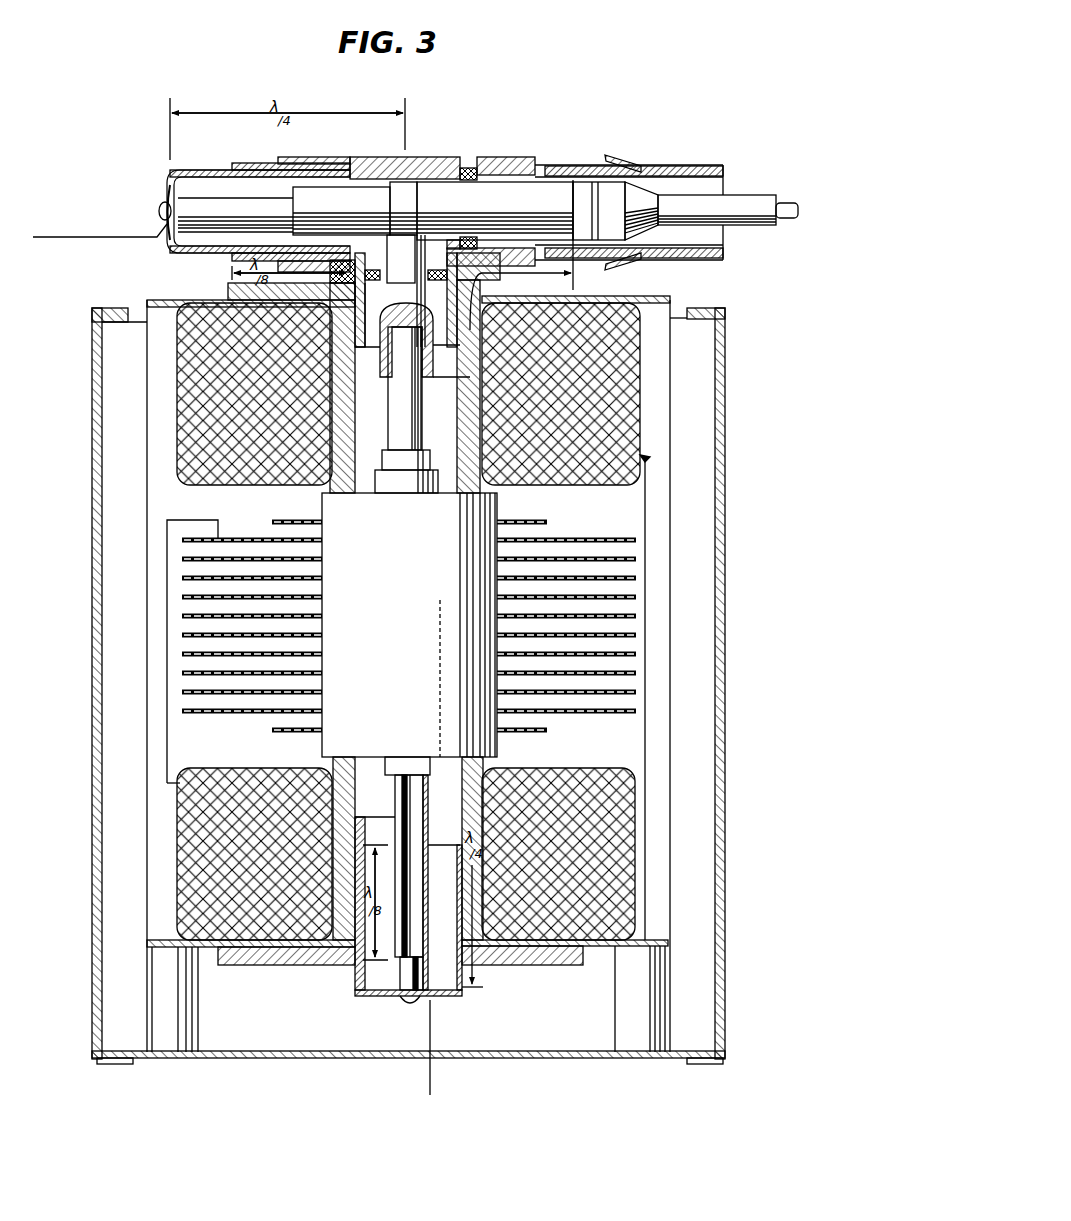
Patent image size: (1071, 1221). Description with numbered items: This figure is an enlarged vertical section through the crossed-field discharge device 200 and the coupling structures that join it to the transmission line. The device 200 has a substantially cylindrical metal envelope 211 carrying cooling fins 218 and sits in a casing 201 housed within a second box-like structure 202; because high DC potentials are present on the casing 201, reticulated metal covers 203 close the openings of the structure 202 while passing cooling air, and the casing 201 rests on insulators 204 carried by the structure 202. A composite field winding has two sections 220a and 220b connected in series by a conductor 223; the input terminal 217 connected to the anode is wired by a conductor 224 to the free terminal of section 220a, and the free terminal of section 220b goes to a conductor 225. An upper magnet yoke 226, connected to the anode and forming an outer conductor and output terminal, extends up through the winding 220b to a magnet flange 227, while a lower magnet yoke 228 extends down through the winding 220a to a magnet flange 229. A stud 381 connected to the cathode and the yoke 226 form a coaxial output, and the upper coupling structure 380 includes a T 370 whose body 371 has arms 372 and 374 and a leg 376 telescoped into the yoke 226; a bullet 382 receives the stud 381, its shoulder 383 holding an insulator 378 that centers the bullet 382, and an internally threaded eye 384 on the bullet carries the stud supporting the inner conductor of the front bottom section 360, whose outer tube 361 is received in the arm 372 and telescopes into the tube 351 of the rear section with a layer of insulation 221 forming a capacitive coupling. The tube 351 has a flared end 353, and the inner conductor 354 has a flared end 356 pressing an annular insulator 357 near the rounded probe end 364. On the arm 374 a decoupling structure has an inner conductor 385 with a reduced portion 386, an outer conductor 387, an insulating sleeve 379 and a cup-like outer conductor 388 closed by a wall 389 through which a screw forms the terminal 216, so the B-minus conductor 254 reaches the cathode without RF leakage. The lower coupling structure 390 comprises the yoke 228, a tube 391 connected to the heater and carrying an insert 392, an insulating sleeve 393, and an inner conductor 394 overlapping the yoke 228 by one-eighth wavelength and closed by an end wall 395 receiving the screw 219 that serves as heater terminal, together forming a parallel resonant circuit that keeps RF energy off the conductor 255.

The crossed-field discharge device 200 is at (499, 505).
The casing 201 is at (158, 300).
The second box-like structure 202 is at (338, 1059).
The reticulated metal covers 203 is at (96, 982).
The insulators 204 is at (197, 1012).
The metal envelope 211 is at (416, 609).
The cathode terminal 216 is at (160, 210).
The anode input terminal 217 is at (220, 537).
The cooling fins 218 is at (182, 579).
The heater terminal screw 219 is at (407, 1003).
The field winding section 220a is at (180, 856).
The field winding section 220b is at (622, 397).
The layer of insulation 221 is at (574, 173).
The conductor 223 is at (647, 648).
The conductor 224 is at (167, 677).
The conductor 225 is at (178, 336).
The magnet yoke 226 is at (337, 407).
The magnet flange 227 is at (232, 291).
The magnet yoke 228 is at (343, 837).
The magnet flange 229 is at (280, 962).
The B-minus conductor 254 is at (98, 242).
The conductor 255 is at (436, 1069).
The outer conductor tube 351 is at (694, 165).
The flared end 353 is at (641, 160).
The inner conductor tube 354 is at (750, 199).
The flared end 356 is at (647, 231).
The annular insulator 357 is at (594, 238).
The front bottom transmission line section 360 is at (590, 163).
The outer conductor tube 361 is at (562, 170).
The rounded end 364 is at (787, 219).
The T 370 is at (414, 154).
The body 371 is at (470, 165).
The arm 372 is at (515, 158).
The arm 374 is at (300, 157).
The leg 376 is at (385, 327).
The insulator 378 is at (371, 270).
The insulating sleeve 379 is at (188, 172).
The upper coupling structure 380 is at (362, 320).
The stud 381 is at (422, 416).
The bullet 382 is at (370, 353).
The shoulder 383 is at (377, 303).
The internally threaded eye 384 is at (411, 190).
The inner conductor 385 is at (358, 197).
The reduced forward portion 386 is at (266, 205).
The outer conductor 387 is at (238, 166).
The cup-like outer conductor 388 is at (258, 247).
The wall 389 is at (167, 189).
The lower coupling structure 390 is at (465, 1000).
The tube 391 is at (398, 806).
The insert 392 is at (405, 976).
The insulating sleeve 393 is at (357, 795).
The inner conductor 394 is at (465, 912).
The end wall 395 is at (376, 996).